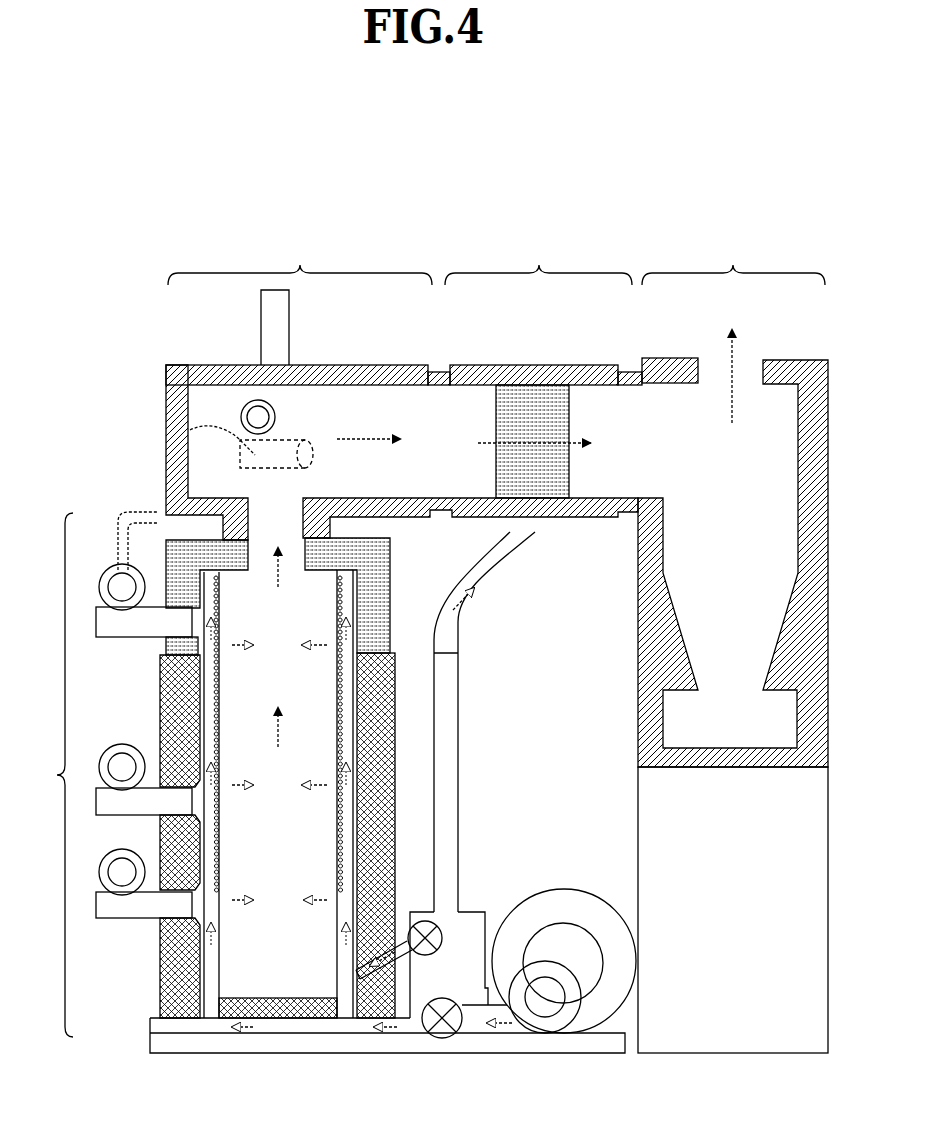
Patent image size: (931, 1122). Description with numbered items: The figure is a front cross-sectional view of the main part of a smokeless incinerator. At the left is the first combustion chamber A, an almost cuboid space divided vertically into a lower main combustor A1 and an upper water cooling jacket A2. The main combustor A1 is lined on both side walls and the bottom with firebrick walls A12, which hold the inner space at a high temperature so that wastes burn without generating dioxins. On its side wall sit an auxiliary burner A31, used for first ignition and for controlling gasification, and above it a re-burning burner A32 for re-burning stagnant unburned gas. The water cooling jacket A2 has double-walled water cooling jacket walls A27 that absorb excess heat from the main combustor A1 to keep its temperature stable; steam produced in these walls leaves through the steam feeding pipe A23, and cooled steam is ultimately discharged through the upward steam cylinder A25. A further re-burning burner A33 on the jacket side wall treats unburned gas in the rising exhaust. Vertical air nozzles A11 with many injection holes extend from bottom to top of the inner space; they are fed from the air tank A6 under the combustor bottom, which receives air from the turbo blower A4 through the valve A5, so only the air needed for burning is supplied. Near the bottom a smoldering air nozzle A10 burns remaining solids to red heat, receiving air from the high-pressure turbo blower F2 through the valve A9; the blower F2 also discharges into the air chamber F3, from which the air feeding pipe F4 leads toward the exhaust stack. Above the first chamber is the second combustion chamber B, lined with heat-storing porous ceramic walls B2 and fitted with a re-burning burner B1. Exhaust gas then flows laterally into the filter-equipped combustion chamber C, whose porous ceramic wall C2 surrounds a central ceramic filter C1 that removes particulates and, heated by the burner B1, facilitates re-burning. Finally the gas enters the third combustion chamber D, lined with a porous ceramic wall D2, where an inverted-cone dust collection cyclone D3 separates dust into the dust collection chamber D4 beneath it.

The first combustion chamber A is at (54, 775).
The main combustor A1 is at (269, 823).
The water cooling jacket A2 is at (266, 624).
The turbo blower A4 is at (545, 1000).
The valve A5 is at (442, 1038).
The air tank A6 is at (288, 1033).
The valve A9 is at (440, 873).
The smoldering air nozzle A10 is at (400, 925).
The air nozzles A11 is at (219, 862).
The firebrick walls A12 is at (175, 720).
The steam feeding pipe A23 is at (148, 515).
The steam cylinder A25 is at (272, 327).
The water cooling jacket walls A27 is at (381, 592).
The auxiliary burner A31 is at (122, 872).
The re-burning burner A32 is at (120, 766).
The re-burning burner A33 is at (132, 625).
The second combustion chamber B is at (300, 257).
The re-burning burner B1 is at (187, 432).
The porous ceramic walls B2 is at (343, 365).
The filter-equipped combustion chamber C is at (538, 257).
The ceramic filter C1 is at (533, 405).
The porous ceramic wall C2 is at (577, 365).
The third combustion chamber D is at (733, 260).
The porous ceramic wall D2 is at (805, 472).
The dust collection cyclone D3 is at (719, 569).
The dust collection chamber D4 is at (719, 736).
The high-pressure turbo blower F2 is at (571, 940).
The air chamber F3 is at (470, 905).
The air feeding pipe F4 is at (502, 565).